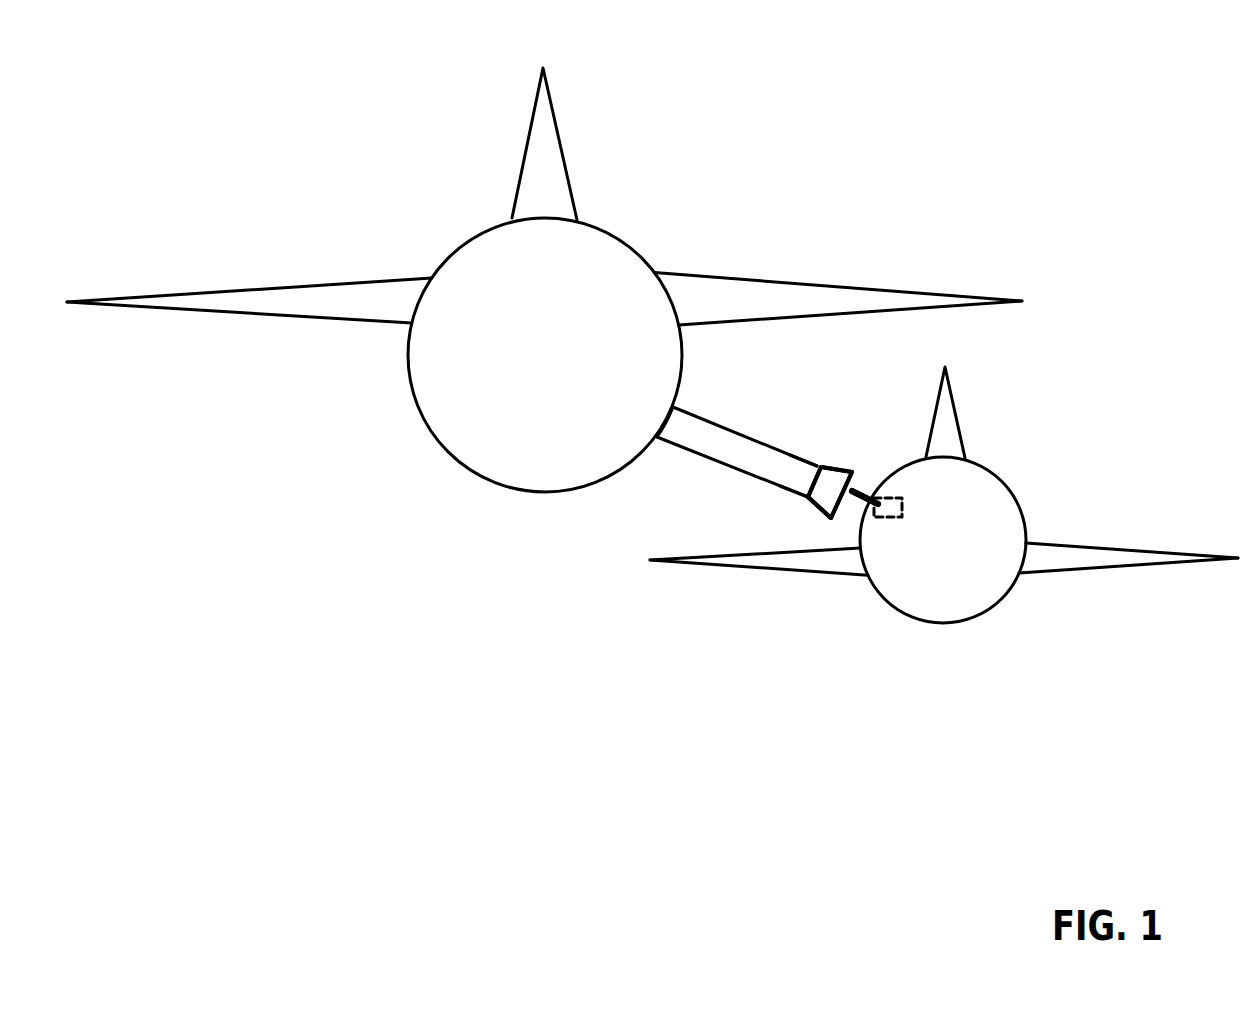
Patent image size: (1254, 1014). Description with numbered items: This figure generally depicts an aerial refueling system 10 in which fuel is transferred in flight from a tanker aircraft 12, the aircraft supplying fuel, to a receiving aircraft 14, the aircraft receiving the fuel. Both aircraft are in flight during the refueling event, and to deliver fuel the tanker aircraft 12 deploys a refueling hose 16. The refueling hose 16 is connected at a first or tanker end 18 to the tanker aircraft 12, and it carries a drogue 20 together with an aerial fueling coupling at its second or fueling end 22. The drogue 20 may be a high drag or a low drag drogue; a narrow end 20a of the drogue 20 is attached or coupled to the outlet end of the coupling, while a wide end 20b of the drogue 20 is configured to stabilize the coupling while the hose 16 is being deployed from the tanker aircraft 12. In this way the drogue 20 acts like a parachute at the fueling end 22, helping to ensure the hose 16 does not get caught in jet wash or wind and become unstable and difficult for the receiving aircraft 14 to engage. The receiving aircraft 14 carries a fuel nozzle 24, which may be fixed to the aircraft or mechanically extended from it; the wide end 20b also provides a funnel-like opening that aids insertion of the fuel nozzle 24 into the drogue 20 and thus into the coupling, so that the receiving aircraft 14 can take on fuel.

The aerial refueling system 10 is at (852, 120).
The tanker aircraft 12 is at (430, 208).
The receiving aircraft 14 is at (1025, 467).
The refueling hose 16 is at (697, 458).
The tanker end 18 is at (680, 402).
The drogue 20 is at (840, 460).
The narrow end of the drogue 20a is at (818, 460).
The wide end of the drogue 20b is at (851, 510).
The fueling end 22 is at (800, 495).
The fuel nozzle 24 is at (863, 487).